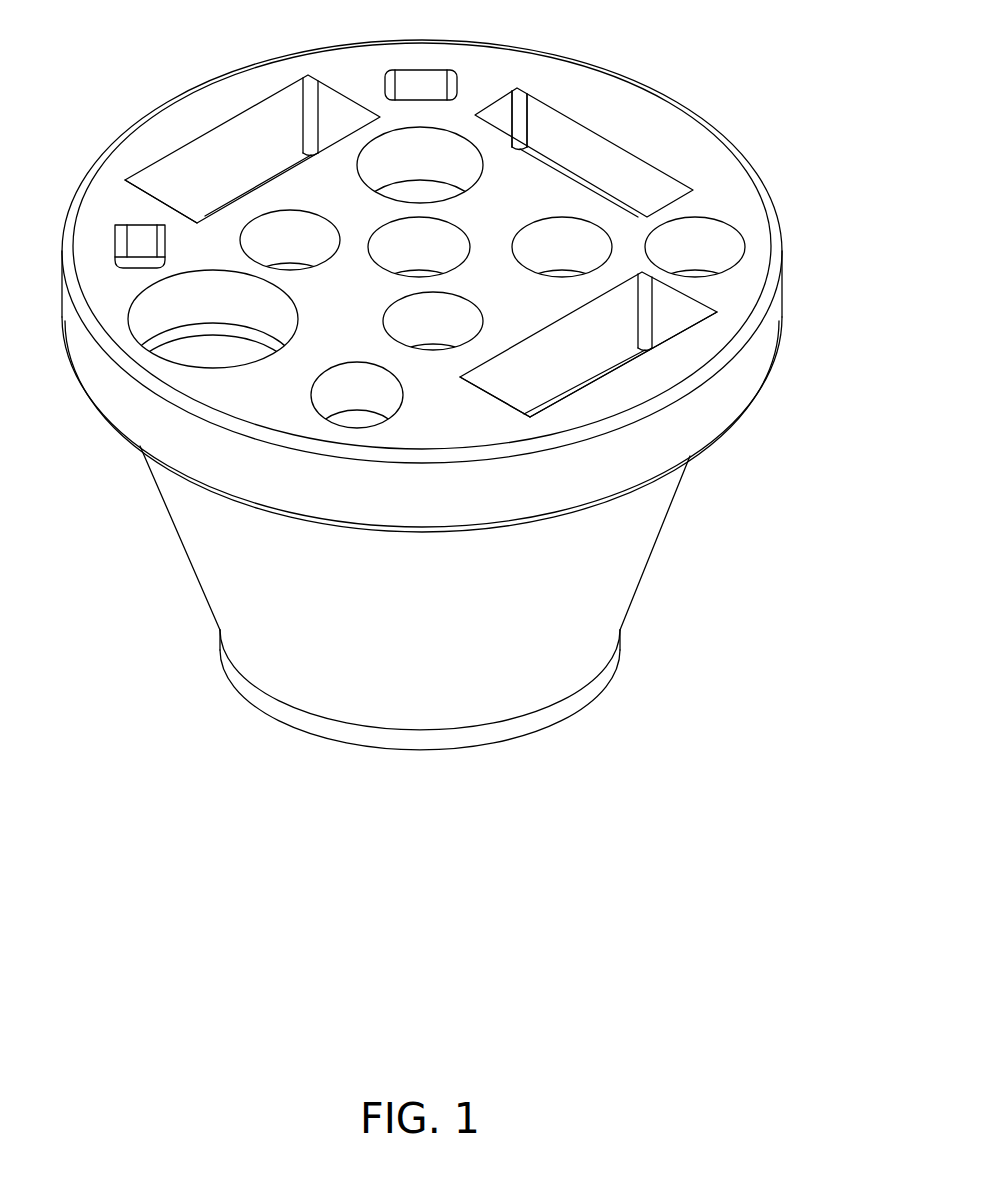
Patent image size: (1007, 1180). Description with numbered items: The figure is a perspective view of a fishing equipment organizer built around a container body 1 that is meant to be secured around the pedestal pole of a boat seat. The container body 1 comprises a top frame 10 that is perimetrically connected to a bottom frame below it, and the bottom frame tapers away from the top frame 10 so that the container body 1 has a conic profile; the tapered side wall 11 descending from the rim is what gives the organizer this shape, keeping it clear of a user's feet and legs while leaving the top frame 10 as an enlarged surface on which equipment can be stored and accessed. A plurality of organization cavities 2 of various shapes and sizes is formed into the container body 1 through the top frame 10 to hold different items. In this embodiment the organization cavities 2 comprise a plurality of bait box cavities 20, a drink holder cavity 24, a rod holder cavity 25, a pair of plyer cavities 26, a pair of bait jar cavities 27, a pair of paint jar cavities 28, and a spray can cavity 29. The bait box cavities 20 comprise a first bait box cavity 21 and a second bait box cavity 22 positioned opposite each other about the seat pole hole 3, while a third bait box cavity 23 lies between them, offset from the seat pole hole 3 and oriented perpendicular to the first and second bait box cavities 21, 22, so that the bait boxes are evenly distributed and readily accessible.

The container body 1 is at (348, 832).
The plurality of organization cavities 2 is at (708, 43).
The seat pole hole 3 is at (427, 240).
The top frame 10 is at (501, 537).
The side wall of container body 11 is at (645, 550).
The plurality of bait box cavities 20 is at (250, 125).
The first bait box cavity 21 is at (128, 183).
The second bait box cavity 22 is at (572, 397).
The third bait box cavity 23 is at (530, 94).
The drink holder cavity 24 is at (263, 310).
The rod holder cavity 25 is at (378, 390).
The pair of plyer cavities 26 is at (423, 87).
The pair of bait jar cavities 27 is at (567, 228).
The pair of paint jar cavities 28 is at (323, 243).
The spray can cavity 29 is at (458, 170).